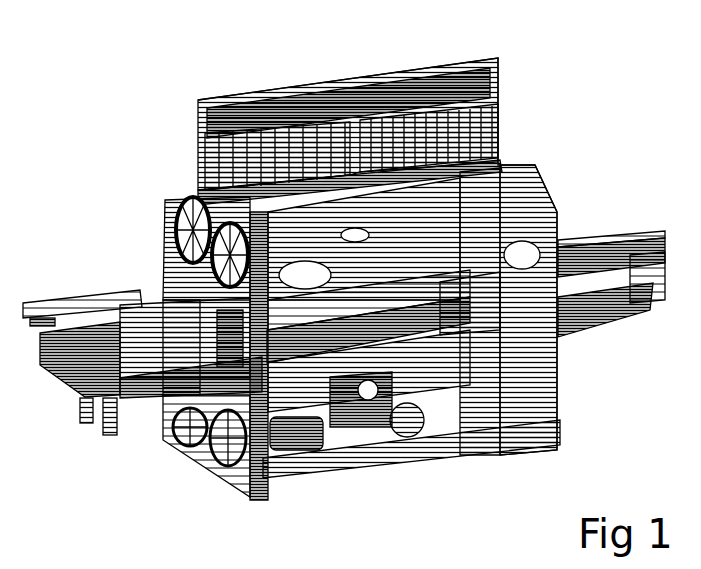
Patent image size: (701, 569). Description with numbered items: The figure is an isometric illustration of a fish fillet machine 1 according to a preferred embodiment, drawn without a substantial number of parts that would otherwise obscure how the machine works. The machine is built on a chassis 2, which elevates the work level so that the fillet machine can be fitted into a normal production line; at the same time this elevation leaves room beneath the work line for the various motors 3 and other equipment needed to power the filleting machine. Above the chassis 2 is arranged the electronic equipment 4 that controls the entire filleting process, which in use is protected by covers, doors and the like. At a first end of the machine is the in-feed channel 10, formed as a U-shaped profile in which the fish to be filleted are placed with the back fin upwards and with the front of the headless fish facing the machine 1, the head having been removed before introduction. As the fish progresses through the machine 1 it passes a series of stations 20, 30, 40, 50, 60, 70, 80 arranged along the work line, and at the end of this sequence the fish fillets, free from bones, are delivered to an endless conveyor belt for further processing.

The machine 1 is at (586, 82).
The chassis 2 is at (547, 373).
The motors 3 is at (405, 483).
The electronic equipment 4 is at (380, 100).
The in-feed channel 10 is at (607, 240).
The station 20 is at (567, 208).
The station 30 is at (466, 332).
The station 40 is at (393, 268).
The station 50 is at (330, 330).
The station 60 is at (187, 310).
The station 70 is at (185, 245).
The station 80 is at (143, 378).